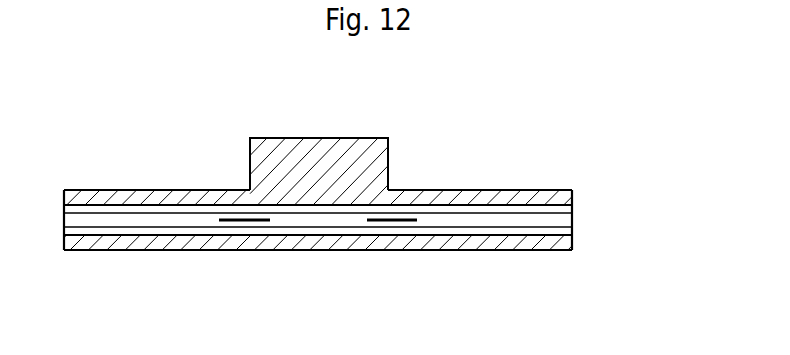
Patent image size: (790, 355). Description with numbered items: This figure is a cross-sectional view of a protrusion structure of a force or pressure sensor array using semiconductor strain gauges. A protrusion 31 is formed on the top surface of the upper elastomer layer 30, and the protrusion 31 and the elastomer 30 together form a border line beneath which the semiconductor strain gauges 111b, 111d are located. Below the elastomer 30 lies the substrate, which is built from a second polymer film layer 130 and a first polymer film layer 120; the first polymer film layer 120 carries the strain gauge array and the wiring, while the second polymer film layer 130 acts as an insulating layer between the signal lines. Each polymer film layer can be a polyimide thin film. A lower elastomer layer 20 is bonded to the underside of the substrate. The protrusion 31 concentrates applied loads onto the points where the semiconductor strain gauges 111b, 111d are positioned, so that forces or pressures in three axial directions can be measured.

The protrusion 31 is at (322, 147).
The elastomer layer 30 is at (546, 197).
The second polymer film layer 130 is at (574, 198).
The first polymer film layer 120 is at (575, 225).
The elastomer layer 20 is at (547, 246).
The semiconductor strain gauge 111d is at (245, 221).
The semiconductor strain gauge 111b is at (392, 222).